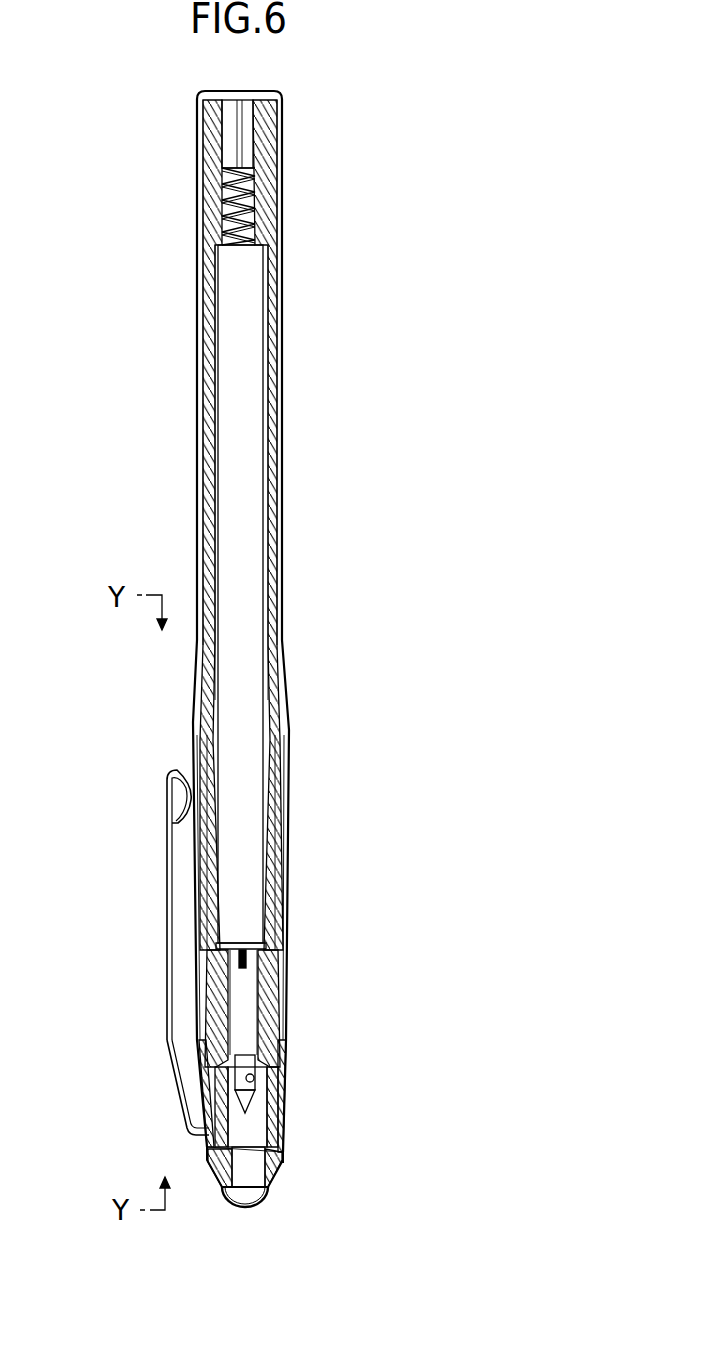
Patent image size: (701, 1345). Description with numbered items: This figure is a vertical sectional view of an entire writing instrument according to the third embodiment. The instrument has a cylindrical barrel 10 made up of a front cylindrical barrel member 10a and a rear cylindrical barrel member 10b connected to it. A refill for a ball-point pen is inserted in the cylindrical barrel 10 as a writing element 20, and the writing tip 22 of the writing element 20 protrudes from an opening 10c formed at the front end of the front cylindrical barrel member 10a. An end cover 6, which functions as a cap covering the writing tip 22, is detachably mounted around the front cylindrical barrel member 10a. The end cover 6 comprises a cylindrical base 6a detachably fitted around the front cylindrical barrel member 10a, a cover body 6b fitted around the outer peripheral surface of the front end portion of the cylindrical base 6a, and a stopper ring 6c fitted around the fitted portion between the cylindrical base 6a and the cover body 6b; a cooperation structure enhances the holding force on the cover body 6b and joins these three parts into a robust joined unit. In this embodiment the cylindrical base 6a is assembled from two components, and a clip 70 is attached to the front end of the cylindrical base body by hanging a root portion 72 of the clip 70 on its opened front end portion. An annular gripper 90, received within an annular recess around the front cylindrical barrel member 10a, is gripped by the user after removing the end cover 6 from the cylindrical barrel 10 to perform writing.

The end cover 6 is at (285, 1170).
The cylindrical base 6a is at (292, 1065).
The cover body 6b is at (225, 1207).
The stopper ring 6c is at (283, 1163).
The cylindrical barrel 10 is at (197, 500).
The front cylindrical barrel member 10a is at (293, 1020).
The rear cylindrical barrel member 10b is at (200, 362).
The opening 10c is at (287, 1087).
The writing element 20 is at (240, 552).
The writing tip 22 is at (256, 1107).
The clip 70 is at (168, 935).
The root portion 72 is at (198, 1142).
The annular gripper 90 is at (203, 875).